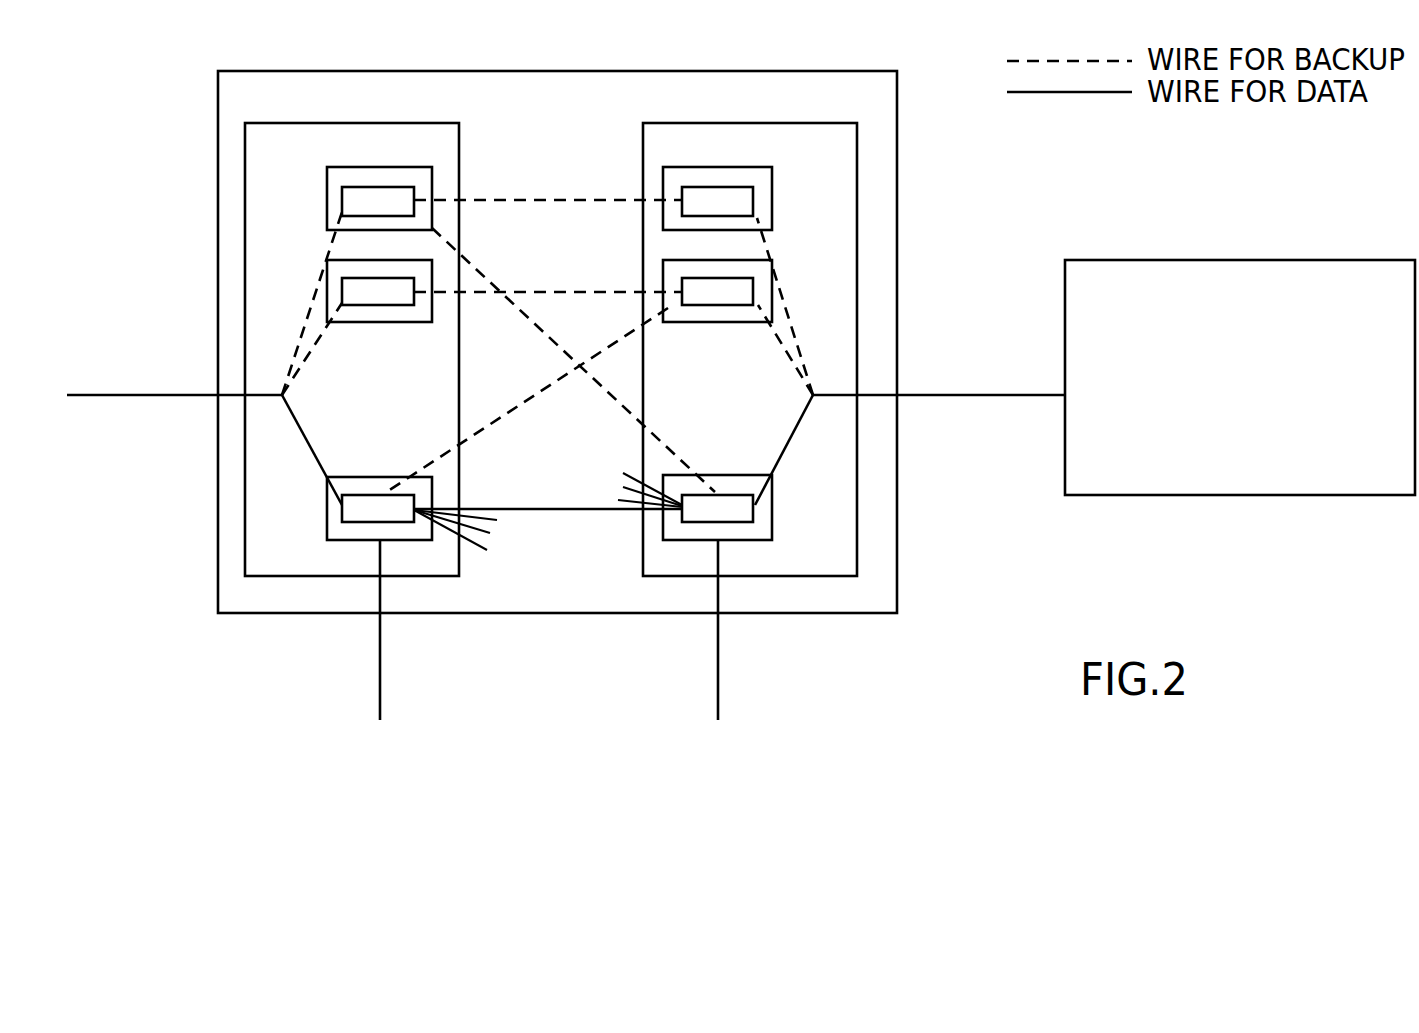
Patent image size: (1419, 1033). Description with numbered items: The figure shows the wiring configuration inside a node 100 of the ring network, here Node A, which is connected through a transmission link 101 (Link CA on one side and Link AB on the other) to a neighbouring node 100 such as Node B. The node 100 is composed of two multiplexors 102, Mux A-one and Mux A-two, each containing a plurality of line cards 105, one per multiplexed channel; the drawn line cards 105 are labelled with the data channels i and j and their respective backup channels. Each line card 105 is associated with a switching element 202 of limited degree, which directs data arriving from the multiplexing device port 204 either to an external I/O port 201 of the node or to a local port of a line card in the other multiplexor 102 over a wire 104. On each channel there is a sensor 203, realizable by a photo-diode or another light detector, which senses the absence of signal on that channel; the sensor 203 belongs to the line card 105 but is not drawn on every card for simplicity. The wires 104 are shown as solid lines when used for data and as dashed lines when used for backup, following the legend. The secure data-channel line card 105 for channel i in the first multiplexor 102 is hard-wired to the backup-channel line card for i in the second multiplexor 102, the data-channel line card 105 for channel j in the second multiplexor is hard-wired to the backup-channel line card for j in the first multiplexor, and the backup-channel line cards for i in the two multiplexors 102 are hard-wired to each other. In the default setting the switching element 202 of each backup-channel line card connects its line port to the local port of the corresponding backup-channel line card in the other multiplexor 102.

The node 100 is at (816, 319).
The transmission link 101 is at (566, 392).
The multiplexor 102 is at (551, 330).
The wire 104 is at (548, 358).
The line card 105 is at (546, 340).
The external I/O port 201 is at (549, 651).
The switching element 202 is at (547, 356).
The sensor 203 is at (548, 352).
The multiplexing device port 204 is at (547, 450).